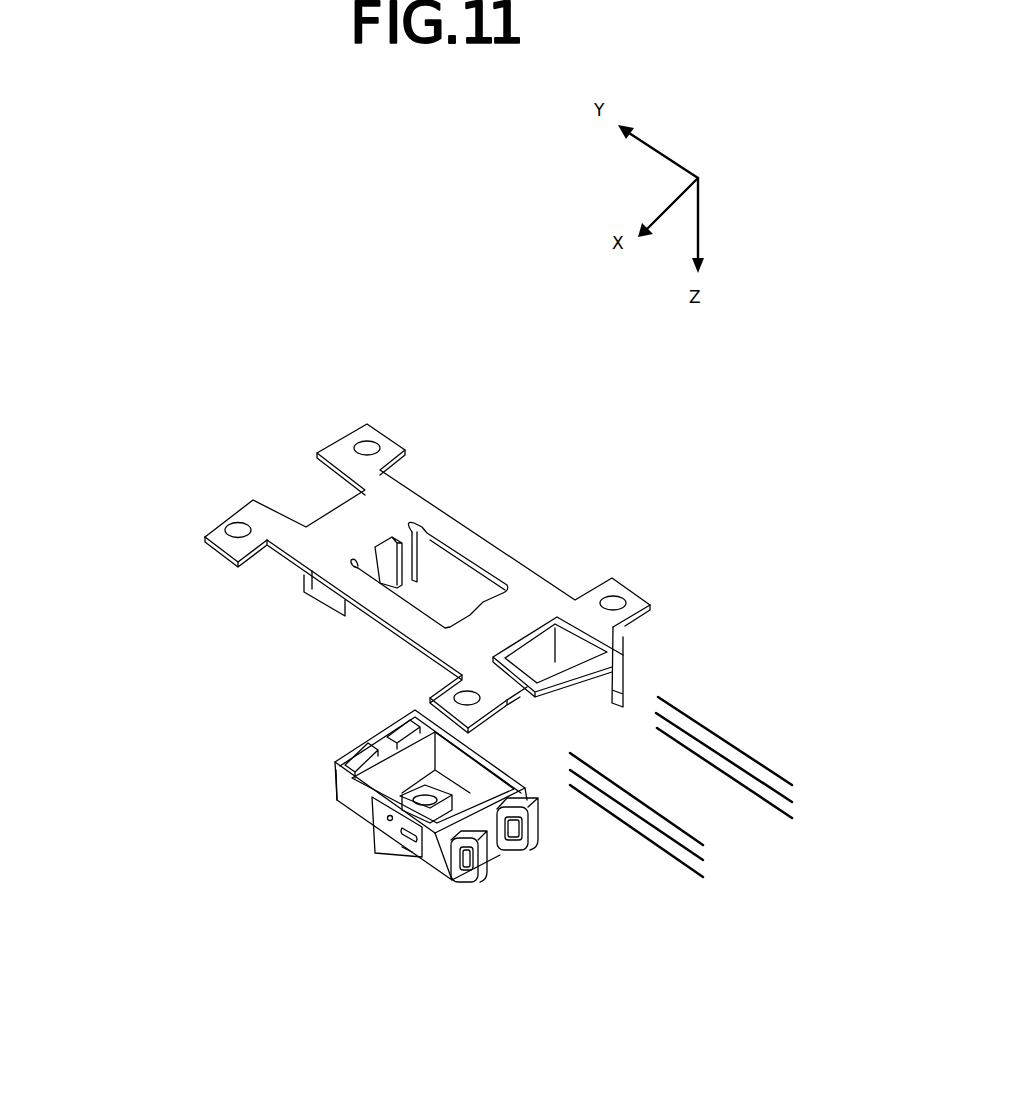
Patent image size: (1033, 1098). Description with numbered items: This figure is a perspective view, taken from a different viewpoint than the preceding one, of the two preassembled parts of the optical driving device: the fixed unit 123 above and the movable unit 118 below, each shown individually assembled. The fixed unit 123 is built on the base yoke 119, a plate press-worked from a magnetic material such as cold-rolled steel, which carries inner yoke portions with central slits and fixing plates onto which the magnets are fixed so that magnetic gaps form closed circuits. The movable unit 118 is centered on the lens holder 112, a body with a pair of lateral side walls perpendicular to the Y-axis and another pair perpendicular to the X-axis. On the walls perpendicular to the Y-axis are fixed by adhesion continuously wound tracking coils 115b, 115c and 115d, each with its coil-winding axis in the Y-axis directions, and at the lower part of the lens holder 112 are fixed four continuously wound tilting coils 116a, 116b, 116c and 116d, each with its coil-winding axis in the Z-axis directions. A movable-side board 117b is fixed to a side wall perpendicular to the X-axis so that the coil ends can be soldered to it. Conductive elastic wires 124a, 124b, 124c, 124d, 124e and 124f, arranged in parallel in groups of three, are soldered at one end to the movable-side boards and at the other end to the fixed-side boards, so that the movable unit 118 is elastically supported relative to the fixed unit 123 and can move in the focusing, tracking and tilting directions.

The fixed unit 123 is at (170, 345).
The movable unit 118 is at (170, 662).
The base yoke 119 is at (438, 522).
The lens holder 112 is at (350, 797).
The tracking coil 115b is at (332, 783).
The tracking coil 115c is at (508, 838).
The tracking coil 115d is at (465, 848).
The tilting coil 116a is at (390, 728).
The tilting coil 116b is at (360, 745).
The tilting coil 116c is at (490, 858).
The tilting coil 116d is at (457, 838).
The movable-side board 117b is at (388, 830).
The wire 124a is at (820, 808).
The wire 124b is at (724, 757).
The wire 124c is at (724, 773).
The wire 124d is at (636, 799).
The wire 124e is at (636, 815).
The wire 124f is at (636, 831).